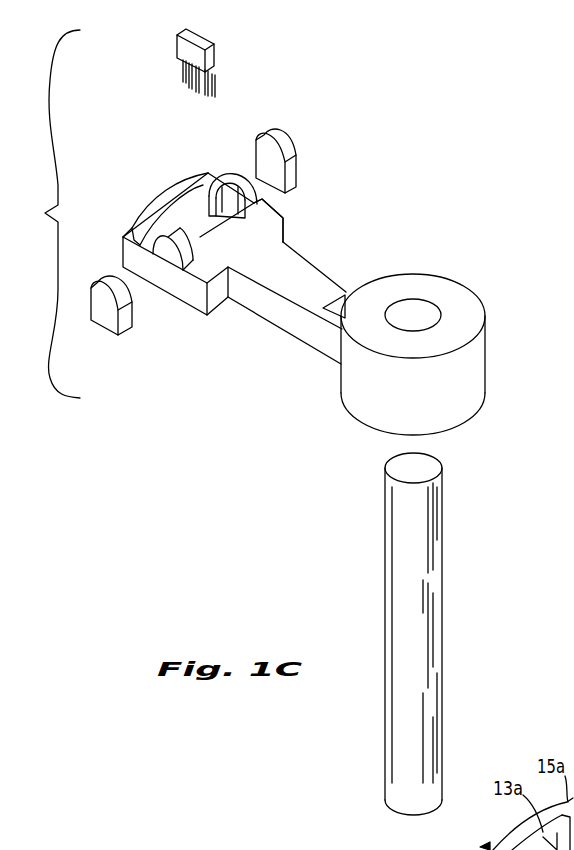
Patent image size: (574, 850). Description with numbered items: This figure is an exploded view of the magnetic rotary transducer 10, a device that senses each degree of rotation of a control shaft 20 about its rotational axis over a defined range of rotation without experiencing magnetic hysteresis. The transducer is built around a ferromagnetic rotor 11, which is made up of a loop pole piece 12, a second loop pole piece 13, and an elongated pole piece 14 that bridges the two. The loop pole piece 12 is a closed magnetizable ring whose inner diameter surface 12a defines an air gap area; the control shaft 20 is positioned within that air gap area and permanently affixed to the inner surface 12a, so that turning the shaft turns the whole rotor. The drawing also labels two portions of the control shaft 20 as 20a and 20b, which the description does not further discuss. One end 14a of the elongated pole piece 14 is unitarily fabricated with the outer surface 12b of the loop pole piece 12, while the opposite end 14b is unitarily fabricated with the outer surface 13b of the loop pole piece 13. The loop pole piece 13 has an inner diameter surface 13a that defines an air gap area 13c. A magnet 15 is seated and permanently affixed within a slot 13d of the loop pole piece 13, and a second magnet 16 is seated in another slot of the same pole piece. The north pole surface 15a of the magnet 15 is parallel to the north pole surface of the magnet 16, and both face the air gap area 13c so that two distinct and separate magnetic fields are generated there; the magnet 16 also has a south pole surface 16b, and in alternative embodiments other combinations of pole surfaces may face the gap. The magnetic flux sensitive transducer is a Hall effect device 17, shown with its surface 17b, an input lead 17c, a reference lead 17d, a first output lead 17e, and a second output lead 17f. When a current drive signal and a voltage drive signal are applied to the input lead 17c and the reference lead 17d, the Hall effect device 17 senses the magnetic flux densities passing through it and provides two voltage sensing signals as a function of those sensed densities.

The magnetic rotary transducer 10 is at (50, 214).
The ferromagnetic rotor 11 is at (398, 243).
The loop pole piece 12 is at (486, 302).
The inner diameter surface 12a is at (422, 310).
The outer surface 12b is at (473, 366).
The loop pole piece 13 is at (137, 204).
The inner diameter surface 13a is at (181, 213).
The outer surface 13b is at (163, 272).
The air gap area 13c is at (229, 293).
The slot 13d is at (224, 197).
The elongated pole piece 14 is at (312, 257).
The end 14a is at (340, 300).
The end 14b is at (262, 243).
The magnet 15 is at (298, 140).
The north pole surface 15a is at (296, 172).
The magnet 16 is at (104, 335).
The south pole surface 16b is at (100, 312).
The Hall effect device 17 is at (198, 28).
The surface 17b is at (181, 55).
The input lead 17c is at (213, 95).
The reference lead 17d is at (197, 90).
The first output lead 17e is at (189, 85).
The second output lead 17f is at (184, 78).
The control shaft 20 is at (436, 647).
The upper end of shaft 20a is at (396, 463).
The lower end of shaft 20b is at (394, 797).